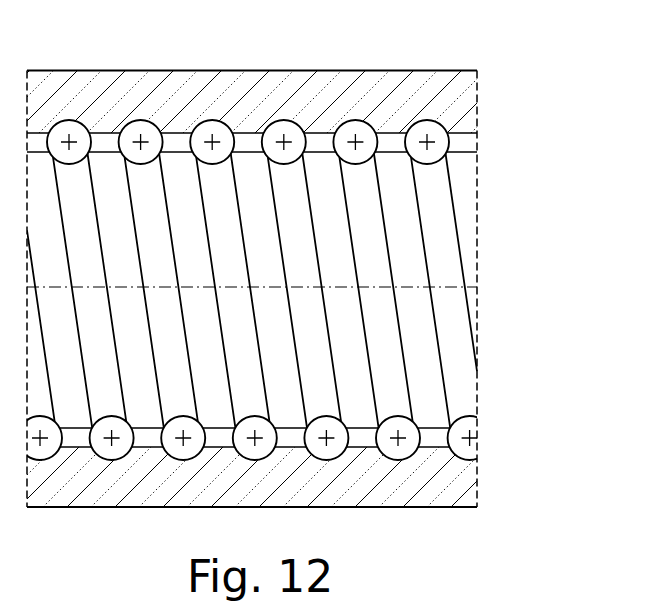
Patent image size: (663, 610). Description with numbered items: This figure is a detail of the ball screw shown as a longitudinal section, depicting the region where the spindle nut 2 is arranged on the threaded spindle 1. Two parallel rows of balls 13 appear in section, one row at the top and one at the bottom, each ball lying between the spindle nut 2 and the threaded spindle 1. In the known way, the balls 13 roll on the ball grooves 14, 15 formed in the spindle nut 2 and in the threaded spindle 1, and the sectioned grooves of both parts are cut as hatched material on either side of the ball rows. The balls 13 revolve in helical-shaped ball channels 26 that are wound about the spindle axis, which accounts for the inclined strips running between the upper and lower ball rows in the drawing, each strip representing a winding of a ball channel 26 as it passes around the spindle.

The threaded spindle 1 is at (389, 322).
The spindle nut 2 is at (365, 477).
The balls 13 is at (437, 143).
The ball groove 14 is at (192, 137).
The ball groove 15 is at (287, 208).
The ball channel 26 is at (457, 378).